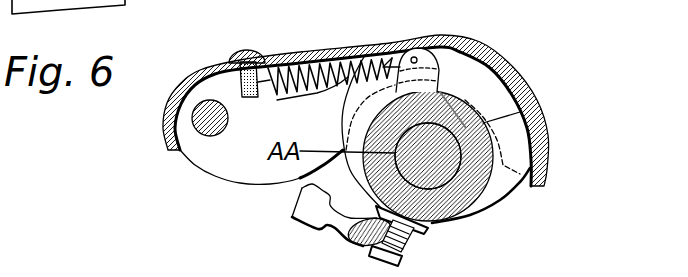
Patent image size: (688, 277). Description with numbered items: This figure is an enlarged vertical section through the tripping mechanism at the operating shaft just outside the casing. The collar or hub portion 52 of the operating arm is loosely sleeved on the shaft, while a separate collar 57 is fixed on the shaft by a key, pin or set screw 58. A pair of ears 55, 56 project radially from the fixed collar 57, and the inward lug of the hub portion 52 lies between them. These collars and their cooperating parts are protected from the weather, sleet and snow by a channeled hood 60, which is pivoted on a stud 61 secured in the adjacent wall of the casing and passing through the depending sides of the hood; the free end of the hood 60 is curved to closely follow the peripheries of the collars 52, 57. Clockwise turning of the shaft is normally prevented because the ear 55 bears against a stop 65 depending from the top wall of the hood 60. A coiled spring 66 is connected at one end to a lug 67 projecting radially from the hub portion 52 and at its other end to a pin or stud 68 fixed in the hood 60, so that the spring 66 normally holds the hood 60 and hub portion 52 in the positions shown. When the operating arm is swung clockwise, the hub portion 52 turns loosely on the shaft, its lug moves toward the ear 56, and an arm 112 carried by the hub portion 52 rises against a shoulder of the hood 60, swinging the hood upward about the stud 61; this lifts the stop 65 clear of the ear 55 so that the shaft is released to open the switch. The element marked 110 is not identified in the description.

The collar or hub portion 52 is at (470, 168).
The ear 55 is at (381, 62).
The ear 56 is at (520, 127).
The collar 57 is at (463, 218).
The key, pin or set screw 58 is at (399, 254).
The channeled hood 60 is at (292, 60).
The stud 61 is at (205, 121).
The stop 65 is at (413, 57).
The coiled spring 66 is at (318, 68).
The lug 67 is at (440, 47).
The pin or stud 68 is at (233, 70).
The spring seat 110 is at (293, 100).
The arm 112 is at (302, 204).